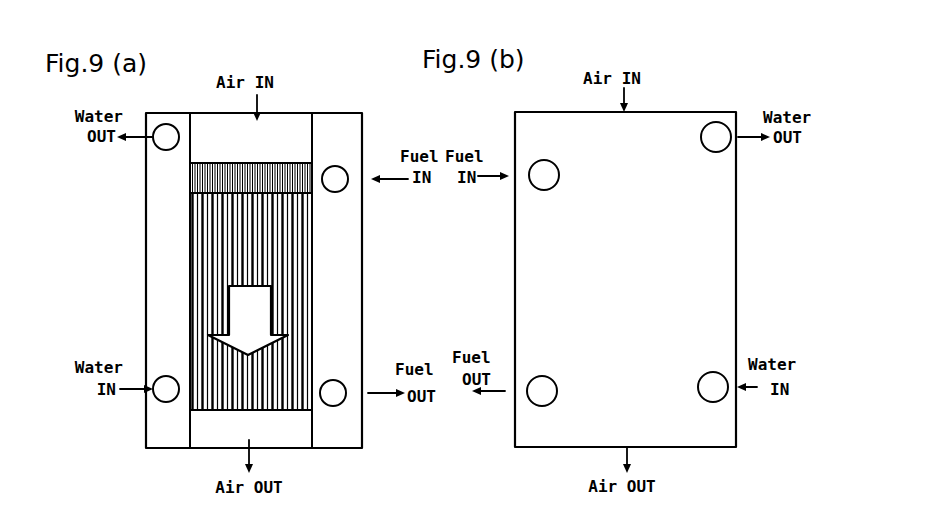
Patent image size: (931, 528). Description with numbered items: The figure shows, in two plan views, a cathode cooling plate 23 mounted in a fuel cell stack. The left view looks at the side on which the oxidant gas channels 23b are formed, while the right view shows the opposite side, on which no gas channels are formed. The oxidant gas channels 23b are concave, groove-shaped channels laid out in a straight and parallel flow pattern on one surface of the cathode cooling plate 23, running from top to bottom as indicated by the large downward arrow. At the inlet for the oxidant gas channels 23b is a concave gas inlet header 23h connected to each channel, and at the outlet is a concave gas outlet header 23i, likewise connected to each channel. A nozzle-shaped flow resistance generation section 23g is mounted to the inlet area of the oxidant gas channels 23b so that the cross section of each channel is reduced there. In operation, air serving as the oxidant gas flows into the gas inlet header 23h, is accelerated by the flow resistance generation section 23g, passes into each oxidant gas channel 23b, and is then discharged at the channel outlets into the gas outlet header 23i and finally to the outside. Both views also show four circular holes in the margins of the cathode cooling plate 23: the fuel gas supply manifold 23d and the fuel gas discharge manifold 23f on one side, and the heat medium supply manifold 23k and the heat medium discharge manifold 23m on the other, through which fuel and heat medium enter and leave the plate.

The cathode cooling plate 23 is at (348, 298).
The oxidant gas channels 23b is at (292, 237).
The fuel gas supply manifold 23d is at (340, 183).
The fuel gas discharge manifold 23f is at (341, 396).
The flow resistance generation section 23g is at (298, 163).
The gas inlet header 23h is at (281, 136).
The gas outlet header 23i is at (287, 430).
The heat medium supply manifold 23k is at (163, 396).
The heat medium discharge manifold 23m is at (162, 143).